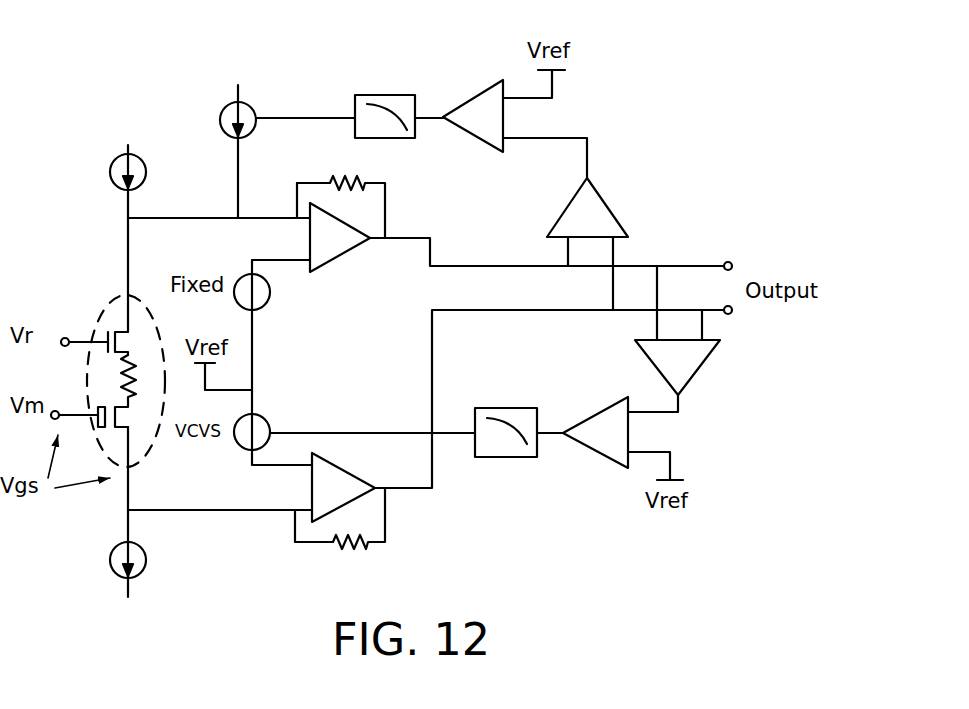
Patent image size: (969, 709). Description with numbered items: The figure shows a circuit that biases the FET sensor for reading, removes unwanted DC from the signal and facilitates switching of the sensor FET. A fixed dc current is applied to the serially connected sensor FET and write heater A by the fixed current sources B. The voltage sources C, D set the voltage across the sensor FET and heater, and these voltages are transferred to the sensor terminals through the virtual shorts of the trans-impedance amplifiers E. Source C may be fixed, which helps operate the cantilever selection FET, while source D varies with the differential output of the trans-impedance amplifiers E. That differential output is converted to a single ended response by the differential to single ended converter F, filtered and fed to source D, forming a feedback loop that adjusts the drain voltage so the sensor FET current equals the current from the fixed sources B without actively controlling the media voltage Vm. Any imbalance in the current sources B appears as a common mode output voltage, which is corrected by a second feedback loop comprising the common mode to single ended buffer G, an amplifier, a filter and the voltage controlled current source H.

The serially connected sensor FET and write heater A is at (98, 318).
The fixed current sources B is at (115, 148).
The voltage source C is at (283, 308).
The voltage source D is at (285, 413).
The trans-impedance amplifiers E is at (408, 220).
The differential to single ended converter F is at (720, 380).
The common mode to single ended buffer G is at (628, 200).
The voltage controlled current source H is at (222, 88).